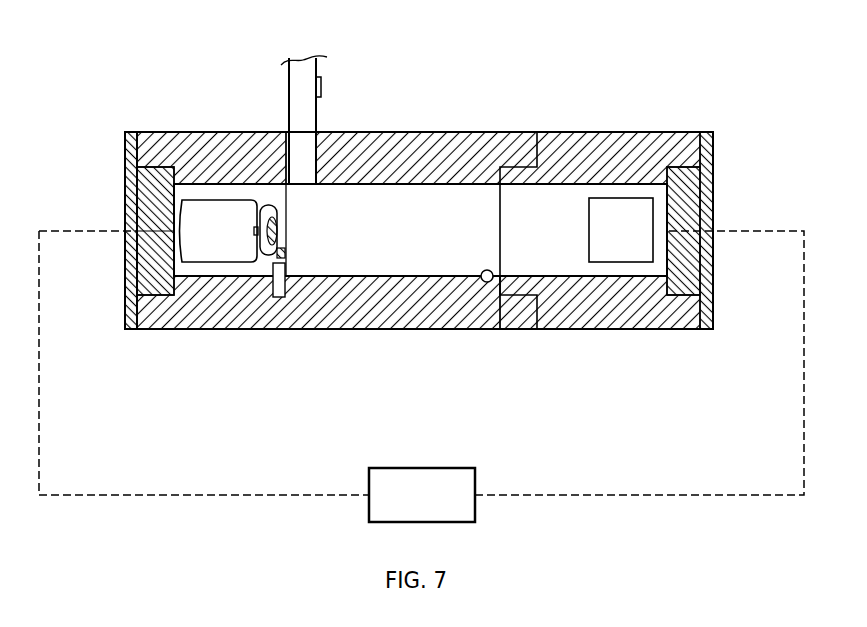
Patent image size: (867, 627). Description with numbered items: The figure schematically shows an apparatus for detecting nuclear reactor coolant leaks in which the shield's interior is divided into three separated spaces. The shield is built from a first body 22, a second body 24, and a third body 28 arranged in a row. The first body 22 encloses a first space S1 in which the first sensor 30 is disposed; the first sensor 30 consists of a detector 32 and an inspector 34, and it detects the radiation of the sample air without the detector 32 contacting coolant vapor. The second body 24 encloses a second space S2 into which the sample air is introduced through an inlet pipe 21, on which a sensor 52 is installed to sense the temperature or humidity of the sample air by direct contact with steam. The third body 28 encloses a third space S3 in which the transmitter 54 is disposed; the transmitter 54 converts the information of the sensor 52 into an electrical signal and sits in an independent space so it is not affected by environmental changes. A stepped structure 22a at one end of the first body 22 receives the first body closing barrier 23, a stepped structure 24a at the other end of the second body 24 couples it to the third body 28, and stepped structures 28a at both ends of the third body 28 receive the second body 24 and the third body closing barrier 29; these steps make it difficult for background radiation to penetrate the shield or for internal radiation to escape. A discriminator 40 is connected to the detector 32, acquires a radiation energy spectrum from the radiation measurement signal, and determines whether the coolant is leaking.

The inlet pipe 21 is at (289, 85).
The first body 22 is at (187, 147).
The stepped structure 22a is at (158, 167).
The first body closing barrier 23 is at (157, 282).
The second body 24 is at (422, 148).
The stepped structure 24a is at (520, 165).
The third body 28 is at (647, 145).
The stepped structure 28a is at (680, 168).
The third body closing barrier 29 is at (685, 272).
The first sensor 30 is at (234, 314).
The detector 32 is at (230, 247).
The inspector 34 is at (279, 287).
The discriminator 40 is at (422, 468).
The sensor 52 is at (322, 83).
The transmitter 54 is at (610, 240).
The first space S1 is at (194, 270).
The second space S2 is at (398, 256).
The third space S3 is at (646, 268).